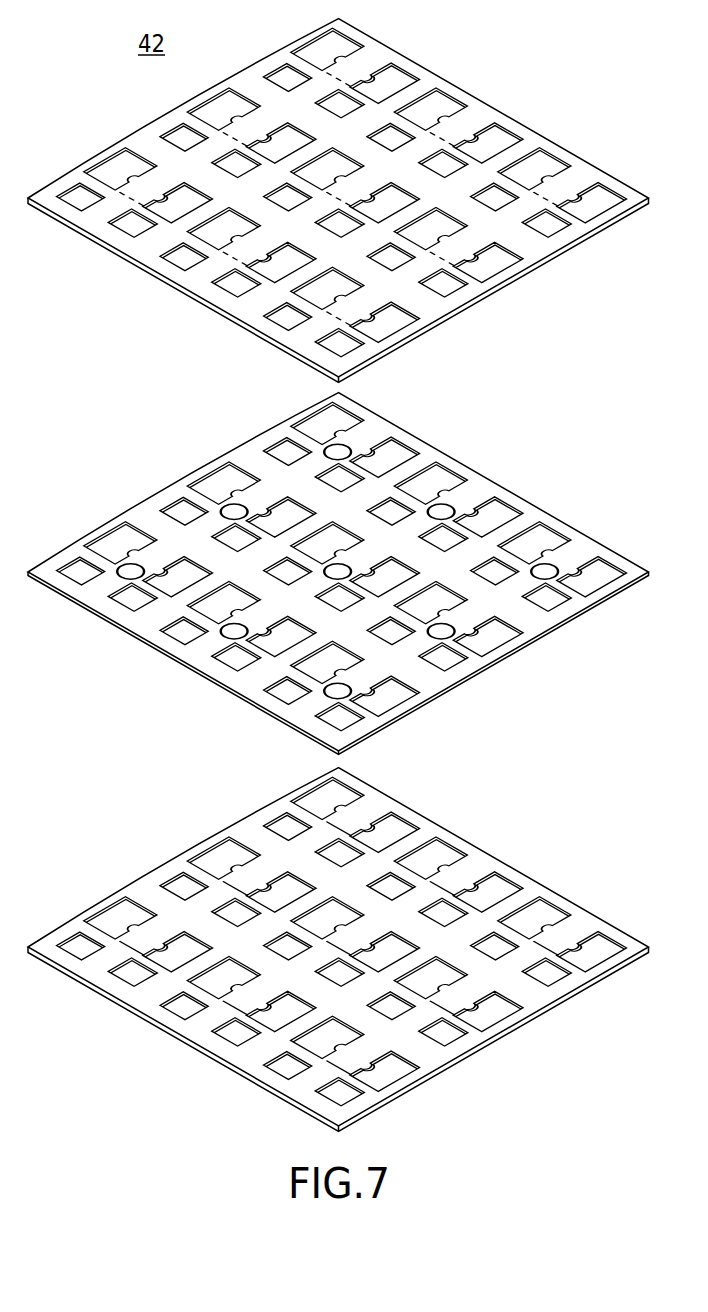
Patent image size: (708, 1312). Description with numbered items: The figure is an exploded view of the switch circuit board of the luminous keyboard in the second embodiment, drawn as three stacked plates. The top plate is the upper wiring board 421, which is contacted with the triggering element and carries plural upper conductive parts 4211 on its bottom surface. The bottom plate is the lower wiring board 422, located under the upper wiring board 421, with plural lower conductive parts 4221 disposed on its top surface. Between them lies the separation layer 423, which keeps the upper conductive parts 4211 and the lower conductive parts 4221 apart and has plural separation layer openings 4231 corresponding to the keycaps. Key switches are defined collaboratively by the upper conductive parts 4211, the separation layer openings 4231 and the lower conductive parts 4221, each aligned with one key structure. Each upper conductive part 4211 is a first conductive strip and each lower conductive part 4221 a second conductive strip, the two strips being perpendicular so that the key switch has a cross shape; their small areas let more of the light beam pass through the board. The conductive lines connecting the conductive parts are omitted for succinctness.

The upper wiring board 421 is at (528, 148).
The upper conductive part 4211 is at (131, 199).
The lower wiring board 422 is at (528, 898).
The lower conductive part 4221 is at (131, 948).
The separation layer 423 is at (528, 523).
The separation layer opening 4231 is at (121, 574).